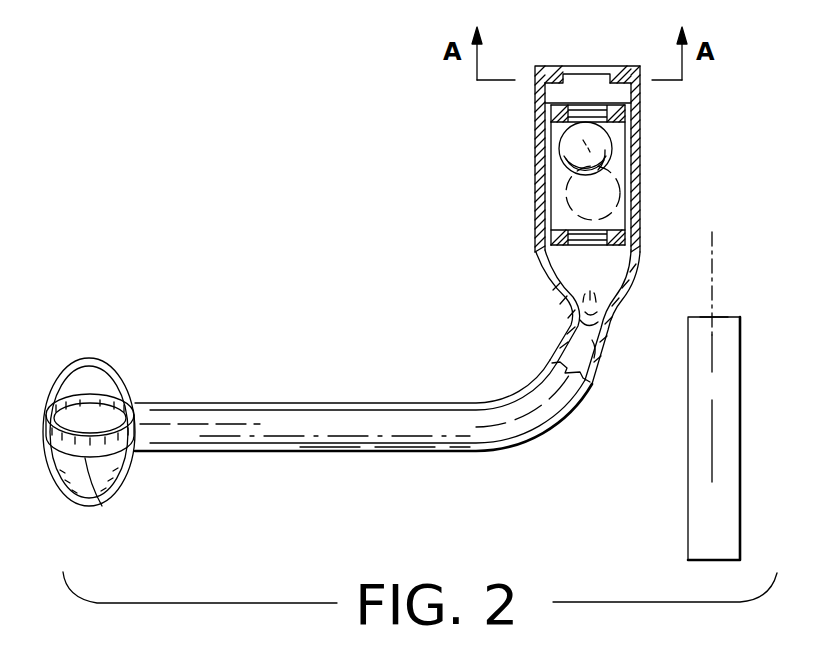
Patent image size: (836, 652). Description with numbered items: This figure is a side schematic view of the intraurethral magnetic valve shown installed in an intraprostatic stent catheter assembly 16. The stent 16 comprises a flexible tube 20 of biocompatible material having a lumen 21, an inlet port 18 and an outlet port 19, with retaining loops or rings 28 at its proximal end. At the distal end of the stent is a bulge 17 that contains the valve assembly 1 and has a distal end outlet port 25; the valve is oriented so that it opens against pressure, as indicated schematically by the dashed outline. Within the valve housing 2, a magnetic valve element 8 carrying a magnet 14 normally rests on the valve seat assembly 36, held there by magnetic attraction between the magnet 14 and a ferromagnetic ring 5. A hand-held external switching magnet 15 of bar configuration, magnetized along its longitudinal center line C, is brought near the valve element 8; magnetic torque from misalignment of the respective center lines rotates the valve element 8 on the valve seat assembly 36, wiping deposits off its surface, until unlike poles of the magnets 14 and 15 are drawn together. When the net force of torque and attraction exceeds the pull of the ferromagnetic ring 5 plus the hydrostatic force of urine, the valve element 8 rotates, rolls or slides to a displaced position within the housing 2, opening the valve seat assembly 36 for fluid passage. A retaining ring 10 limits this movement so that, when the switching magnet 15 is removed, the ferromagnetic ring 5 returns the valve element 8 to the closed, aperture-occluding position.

The valve assembly 1 is at (600, 200).
The valve housing 2 is at (536, 168).
The ferromagnetic ring 5 is at (577, 103).
The valve element 8 is at (603, 139).
The retaining ring 10 is at (573, 250).
The magnet 14 is at (608, 153).
The switching magnet 15 is at (688, 520).
The intraprostatic stent catheter assembly 16 is at (335, 404).
The bulge 17 is at (557, 295).
The inlet port 18 is at (137, 430).
The outlet port 19 is at (597, 342).
The flexible tube 20 is at (368, 453).
The lumen 21 is at (590, 378).
The distal end outlet port 25 is at (595, 84).
The retaining loops 28 is at (88, 503).
The valve seat assembly 36 is at (572, 118).
The centerline of external magnet C is at (711, 270).